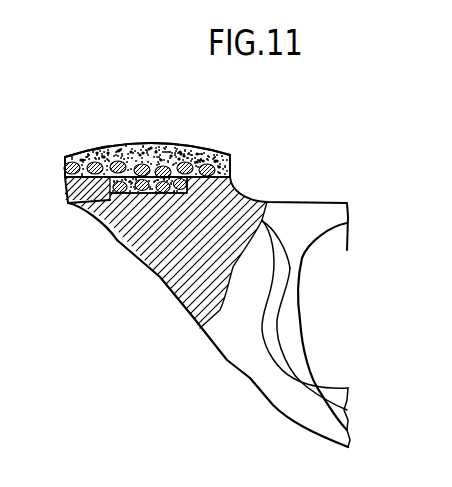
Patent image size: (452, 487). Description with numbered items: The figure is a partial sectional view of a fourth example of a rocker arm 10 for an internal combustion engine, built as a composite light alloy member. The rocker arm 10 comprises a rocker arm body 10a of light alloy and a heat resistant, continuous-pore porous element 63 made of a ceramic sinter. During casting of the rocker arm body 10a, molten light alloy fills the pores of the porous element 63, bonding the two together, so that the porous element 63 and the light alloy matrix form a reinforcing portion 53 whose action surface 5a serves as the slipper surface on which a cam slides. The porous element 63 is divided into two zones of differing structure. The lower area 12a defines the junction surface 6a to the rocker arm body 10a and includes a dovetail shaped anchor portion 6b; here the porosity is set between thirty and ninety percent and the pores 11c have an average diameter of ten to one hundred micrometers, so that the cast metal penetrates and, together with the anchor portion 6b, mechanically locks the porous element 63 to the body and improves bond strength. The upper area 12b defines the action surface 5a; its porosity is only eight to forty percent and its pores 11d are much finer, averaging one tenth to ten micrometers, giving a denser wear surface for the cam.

The rocker arm 10 is at (273, 405).
The rocker arm body 10a is at (191, 315).
The pores 11c is at (158, 190).
The pores 11d is at (108, 155).
The area 12a is at (100, 206).
The area 12b is at (133, 146).
The action surface 5a is at (183, 145).
The reinforcing portion 53 is at (163, 143).
The porous element 63 is at (67, 156).
The junction surface 6a is at (66, 185).
The anchor portion 6b is at (133, 196).